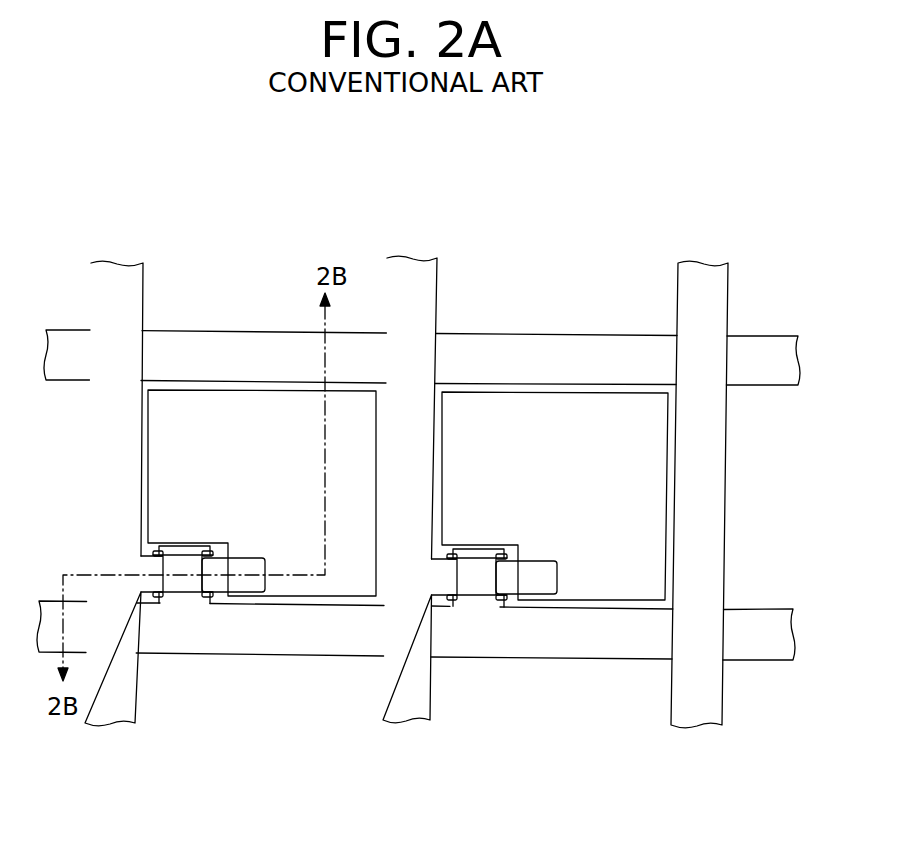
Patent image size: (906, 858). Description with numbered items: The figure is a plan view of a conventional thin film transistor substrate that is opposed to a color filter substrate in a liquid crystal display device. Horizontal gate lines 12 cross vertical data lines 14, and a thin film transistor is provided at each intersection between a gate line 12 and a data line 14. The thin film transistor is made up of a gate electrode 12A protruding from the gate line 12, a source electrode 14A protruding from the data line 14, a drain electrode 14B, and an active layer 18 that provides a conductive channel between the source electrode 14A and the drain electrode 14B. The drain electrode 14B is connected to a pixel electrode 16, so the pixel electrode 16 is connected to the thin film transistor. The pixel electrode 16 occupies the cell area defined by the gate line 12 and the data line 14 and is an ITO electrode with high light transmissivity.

The gate line 12 is at (66, 377).
The gate electrode 12A is at (173, 546).
The data line 14 is at (90, 486).
The source electrode 14A is at (154, 594).
The drain electrode 14B is at (211, 594).
The pixel electrode 16 is at (243, 396).
The active layer 18 is at (188, 557).